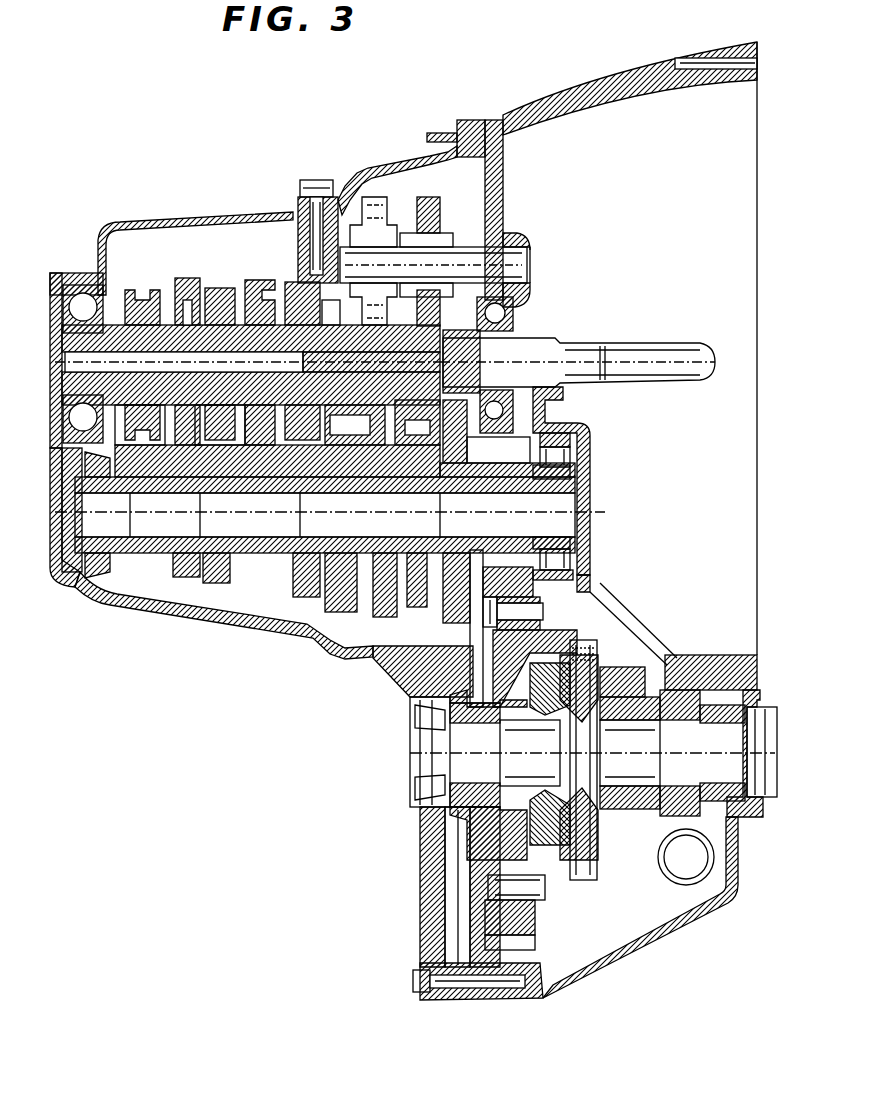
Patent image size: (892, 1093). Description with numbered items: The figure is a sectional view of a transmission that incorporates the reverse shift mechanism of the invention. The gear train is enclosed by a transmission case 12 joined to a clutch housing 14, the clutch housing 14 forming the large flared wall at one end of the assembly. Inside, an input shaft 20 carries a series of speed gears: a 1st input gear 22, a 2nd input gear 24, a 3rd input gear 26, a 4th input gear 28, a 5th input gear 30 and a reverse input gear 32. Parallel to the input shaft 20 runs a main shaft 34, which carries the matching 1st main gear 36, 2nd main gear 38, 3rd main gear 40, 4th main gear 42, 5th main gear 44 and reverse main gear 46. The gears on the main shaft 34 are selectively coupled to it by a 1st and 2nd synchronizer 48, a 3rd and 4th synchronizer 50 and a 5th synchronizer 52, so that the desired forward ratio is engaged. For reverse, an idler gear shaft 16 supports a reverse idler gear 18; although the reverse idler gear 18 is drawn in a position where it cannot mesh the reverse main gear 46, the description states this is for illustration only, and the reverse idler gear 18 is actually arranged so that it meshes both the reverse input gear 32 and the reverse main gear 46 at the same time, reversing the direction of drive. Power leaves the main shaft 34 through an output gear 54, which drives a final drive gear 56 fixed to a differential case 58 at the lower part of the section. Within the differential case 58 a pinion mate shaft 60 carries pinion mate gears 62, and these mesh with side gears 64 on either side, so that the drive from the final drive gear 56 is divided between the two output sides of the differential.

The transmission case 12 is at (376, 162).
The clutch housing 14 is at (505, 108).
The idler gear shaft 16 is at (507, 257).
The reverse idler gear 18 is at (440, 215).
The input shaft 20 is at (650, 348).
The 1st input gear 22 is at (460, 332).
The 2nd input gear 24 is at (342, 322).
The 3rd input gear 26 is at (300, 292).
The 4th input gear 28 is at (218, 288).
The 5th input gear 30 is at (186, 278).
The reverse input gear 32 is at (398, 298).
The main shaft 34 is at (578, 485).
The 1st main gear 36 is at (460, 625).
The 2nd main gear 38 is at (338, 613).
The 3rd main gear 40 is at (306, 598).
The 4th main gear 42 is at (216, 585).
The 5th main gear 44 is at (187, 578).
The reverse main gear 46 is at (383, 618).
The 1st and 2nd synchronizer 48 is at (409, 600).
The 3rd and 4th synchronizer 50 is at (260, 272).
The 5th synchronizer 52 is at (161, 285).
The output gear 54 is at (538, 450).
The final drive gear 56 is at (537, 940).
The differential case 58 is at (560, 862).
The pinion mate shaft 60 is at (592, 855).
The pinion mate gears 62 is at (615, 668).
The side gears 64 is at (668, 660).